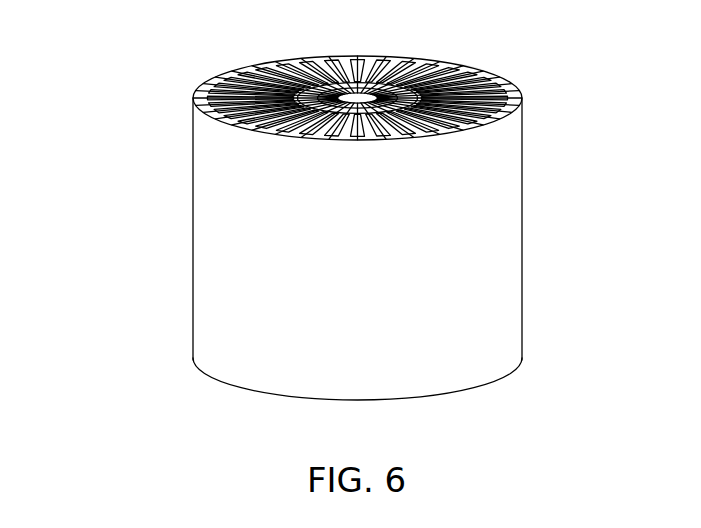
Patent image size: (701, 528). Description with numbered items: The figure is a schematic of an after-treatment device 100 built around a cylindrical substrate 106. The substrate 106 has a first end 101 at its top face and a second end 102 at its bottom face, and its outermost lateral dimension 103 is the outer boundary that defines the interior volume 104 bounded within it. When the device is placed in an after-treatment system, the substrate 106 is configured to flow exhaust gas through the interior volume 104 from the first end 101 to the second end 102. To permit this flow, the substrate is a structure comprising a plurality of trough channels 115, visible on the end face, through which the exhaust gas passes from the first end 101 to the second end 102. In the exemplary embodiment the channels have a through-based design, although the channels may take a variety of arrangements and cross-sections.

The after-treatment device 100 is at (311, 207).
The first end 101 is at (389, 83).
The second end 102 is at (523, 358).
The outermost lateral dimension 103 is at (358, 98).
The interior volume 104 is at (485, 73).
The substrate 106 is at (193, 314).
The trough channels 115 is at (358, 98).